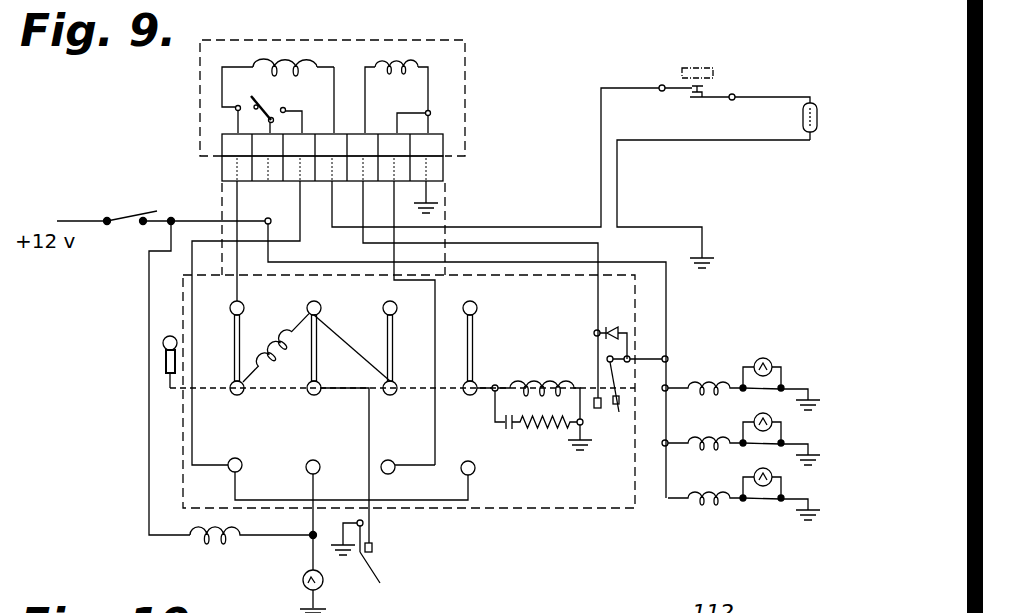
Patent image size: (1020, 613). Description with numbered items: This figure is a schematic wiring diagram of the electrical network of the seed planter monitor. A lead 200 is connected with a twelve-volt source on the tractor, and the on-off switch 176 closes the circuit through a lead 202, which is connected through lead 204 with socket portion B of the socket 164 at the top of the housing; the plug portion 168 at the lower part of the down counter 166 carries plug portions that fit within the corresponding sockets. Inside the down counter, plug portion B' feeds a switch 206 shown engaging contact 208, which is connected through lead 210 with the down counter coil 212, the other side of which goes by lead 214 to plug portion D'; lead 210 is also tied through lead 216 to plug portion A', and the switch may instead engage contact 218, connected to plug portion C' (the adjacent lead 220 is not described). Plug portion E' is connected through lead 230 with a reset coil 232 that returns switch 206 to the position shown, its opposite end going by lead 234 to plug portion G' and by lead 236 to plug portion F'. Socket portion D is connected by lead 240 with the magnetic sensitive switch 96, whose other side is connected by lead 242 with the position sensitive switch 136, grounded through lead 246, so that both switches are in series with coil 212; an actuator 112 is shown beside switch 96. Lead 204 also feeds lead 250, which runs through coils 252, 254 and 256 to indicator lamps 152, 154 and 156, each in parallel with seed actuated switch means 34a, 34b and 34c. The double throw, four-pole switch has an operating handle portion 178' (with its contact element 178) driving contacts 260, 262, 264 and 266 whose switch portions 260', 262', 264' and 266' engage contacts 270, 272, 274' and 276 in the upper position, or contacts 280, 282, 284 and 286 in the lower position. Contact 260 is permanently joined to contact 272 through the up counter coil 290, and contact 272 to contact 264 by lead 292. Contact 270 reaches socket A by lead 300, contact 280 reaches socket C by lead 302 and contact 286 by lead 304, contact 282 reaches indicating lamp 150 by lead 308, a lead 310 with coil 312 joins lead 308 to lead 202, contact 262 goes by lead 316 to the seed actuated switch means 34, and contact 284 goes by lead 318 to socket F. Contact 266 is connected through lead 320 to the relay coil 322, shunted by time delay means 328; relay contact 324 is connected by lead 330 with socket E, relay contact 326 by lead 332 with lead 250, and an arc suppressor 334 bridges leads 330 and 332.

The lead 200 is at (93, 219).
The on-off switch 176 is at (128, 211).
The lead 202 is at (189, 219).
The lead 204 is at (271, 215).
The down counter 166 is at (470, 70).
The lead 210 is at (278, 87).
The down counter coil 212 is at (287, 60).
The lead 214 is at (335, 82).
The lead 216 is at (236, 109).
The contact 208 is at (240, 119).
The switch 206 is at (284, 107).
The contact 218 is at (334, 100).
The lead 220 is at (334, 120).
The lead 230 is at (396, 100).
The reset coil 232 is at (397, 62).
The lead 234 is at (430, 98).
The lead 236 is at (431, 114).
The plug portion 168 is at (445, 140).
The socket 164 is at (445, 166).
The lead 300 is at (238, 258).
The lead 250 is at (306, 262).
The lead 240 is at (492, 227).
The magnetic sensitive switch 96 is at (719, 90).
The lead 242 is at (777, 97).
The position sensitive switch 136 is at (812, 142).
The lead 246 is at (700, 140).
The actuator 112 is at (701, 66).
The lead 330 is at (594, 305).
The lead 316 is at (433, 440).
The lead 318 is at (440, 437).
The lead 302 is at (191, 307).
The lead 310 is at (149, 430).
The coil 312 is at (215, 543).
The lead 308 is at (312, 522).
The indicating lamp 150 is at (325, 585).
The operating handle portion 178' is at (138, 350).
The actuator contact 178 is at (135, 370).
The contact 270 is at (243, 305).
The switch portion 260' is at (224, 348).
The contact 260 is at (256, 402).
The contact 272 is at (320, 306).
The switch portion 262' is at (343, 348).
The contact 262 is at (328, 405).
The fixed contact 274' is at (414, 298).
The switch portion 264' is at (417, 348).
The contact 264 is at (406, 407).
The contact 276 is at (477, 305).
The switch portion 266' is at (505, 348).
The contact 266 is at (470, 407).
The coil 290 is at (276, 340).
The lead 292 is at (336, 333).
The lead 320 is at (496, 385).
The coil 322 is at (545, 381).
The time delay means 328 is at (536, 433).
The arc suppressor 334 is at (621, 326).
The lead 332 is at (628, 345).
The contact 324 is at (600, 410).
The contact 326 is at (619, 415).
The contact 280 is at (242, 464).
The contact 282 is at (317, 463).
The contact 284 is at (391, 475).
The contact 286 is at (472, 476).
The lead 304 is at (400, 503).
The seed actuated switch means 34 is at (379, 554).
The coil 252 is at (700, 381).
The indicator lamp 152 is at (771, 362).
The seed actuated switch means 34a is at (776, 396).
The coil 254 is at (690, 436).
The indicator lamp 154 is at (769, 421).
The seed actuated switch means 34b is at (776, 452).
The coil 256 is at (705, 505).
The indicator lamp 156 is at (760, 474).
The seed actuated switch means 34c is at (766, 508).